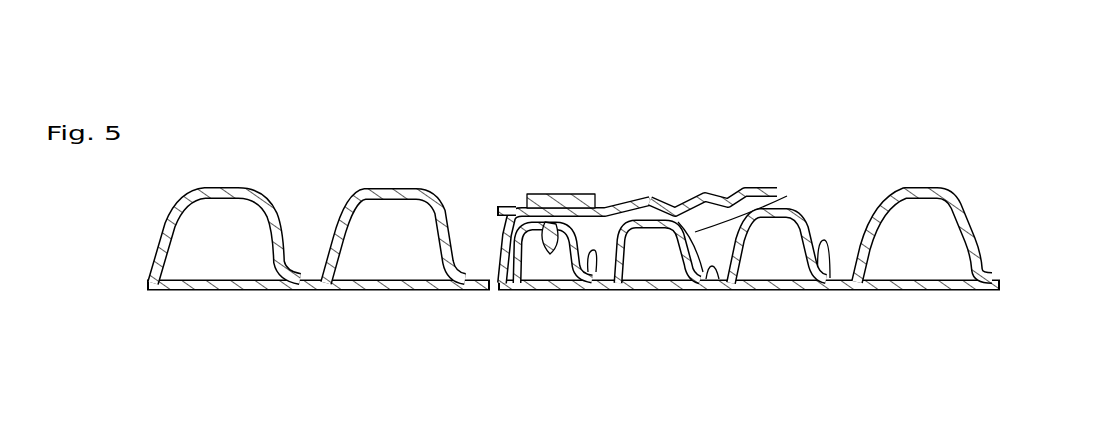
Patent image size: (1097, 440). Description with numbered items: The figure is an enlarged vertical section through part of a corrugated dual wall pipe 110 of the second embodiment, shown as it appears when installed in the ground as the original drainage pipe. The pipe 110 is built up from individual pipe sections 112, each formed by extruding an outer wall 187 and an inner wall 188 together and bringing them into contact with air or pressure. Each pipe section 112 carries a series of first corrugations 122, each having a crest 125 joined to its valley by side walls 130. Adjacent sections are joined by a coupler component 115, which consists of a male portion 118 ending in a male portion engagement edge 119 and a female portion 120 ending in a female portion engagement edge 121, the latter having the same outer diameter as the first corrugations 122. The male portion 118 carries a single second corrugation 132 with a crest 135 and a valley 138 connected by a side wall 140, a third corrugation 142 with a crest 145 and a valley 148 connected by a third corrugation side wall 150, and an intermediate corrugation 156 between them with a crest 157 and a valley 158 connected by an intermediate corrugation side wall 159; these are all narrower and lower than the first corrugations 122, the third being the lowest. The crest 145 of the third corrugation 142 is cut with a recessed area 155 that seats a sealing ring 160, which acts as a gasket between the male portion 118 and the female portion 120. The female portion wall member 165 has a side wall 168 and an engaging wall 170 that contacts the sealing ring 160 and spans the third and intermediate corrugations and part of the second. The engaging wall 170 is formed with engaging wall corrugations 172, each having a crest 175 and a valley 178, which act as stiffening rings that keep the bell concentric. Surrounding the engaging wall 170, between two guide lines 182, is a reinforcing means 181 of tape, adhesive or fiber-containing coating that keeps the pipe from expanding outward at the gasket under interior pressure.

The corrugated dual wall pipe 110 is at (462, 142).
The pipe section 112 is at (278, 170).
The coupler component 115 is at (556, 182).
The male portion 118 is at (636, 312).
The male portion engagement edge 119 is at (500, 287).
The female portion 120 is at (560, 208).
The female portion engagement edge 121 is at (787, 196).
The first corrugation 122 is at (417, 170).
The crest 125 is at (386, 190).
The side wall 130 is at (322, 240).
The second corrugation 132 is at (820, 200).
The crest 135 is at (800, 205).
The valley 138 is at (848, 287).
The side wall 140 is at (822, 287).
The third corrugation 142 is at (597, 200).
The crest 145 is at (543, 207).
The valley 148 is at (582, 255).
The third corrugation side wall 150 is at (564, 252).
The recessed area 155 is at (546, 288).
The intermediate corrugation 156 is at (752, 190).
The crest 157 is at (645, 218).
The valley 158 is at (723, 287).
The intermediate corrugation side wall 159 is at (702, 288).
The sealing ring 160 is at (572, 208).
The female portion wall member 165 is at (520, 198).
The side wall 168 is at (497, 268).
The engaging wall 170 is at (583, 208).
The engaging wall corrugation 172 is at (673, 208).
The crest 175 is at (650, 196).
The valley 178 is at (688, 192).
The reinforcing means 181 is at (535, 193).
The guide line 182 is at (497, 206).
The outer wall 187 is at (236, 168).
The inner wall 188 is at (226, 328).